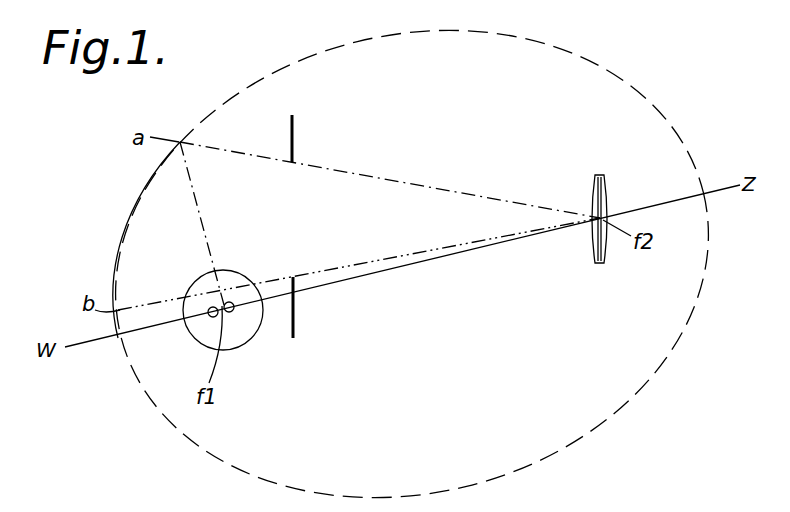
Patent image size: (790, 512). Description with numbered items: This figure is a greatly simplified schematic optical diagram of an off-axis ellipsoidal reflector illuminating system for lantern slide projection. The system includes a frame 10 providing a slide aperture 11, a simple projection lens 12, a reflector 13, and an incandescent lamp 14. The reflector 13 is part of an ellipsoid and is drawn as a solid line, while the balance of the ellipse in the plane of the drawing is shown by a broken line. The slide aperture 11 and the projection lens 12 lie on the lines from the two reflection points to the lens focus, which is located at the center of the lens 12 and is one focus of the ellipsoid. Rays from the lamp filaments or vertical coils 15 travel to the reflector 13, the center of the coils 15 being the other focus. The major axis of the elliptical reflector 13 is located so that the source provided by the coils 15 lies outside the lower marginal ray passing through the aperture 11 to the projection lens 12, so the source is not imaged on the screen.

The frame 10 is at (293, 132).
The slide aperture 11 is at (290, 193).
The projection lens 12 is at (603, 182).
The reflector 13 is at (140, 198).
The incandescent lamp 14 is at (247, 347).
The lamp filaments or vertical coils 15 is at (209, 316).